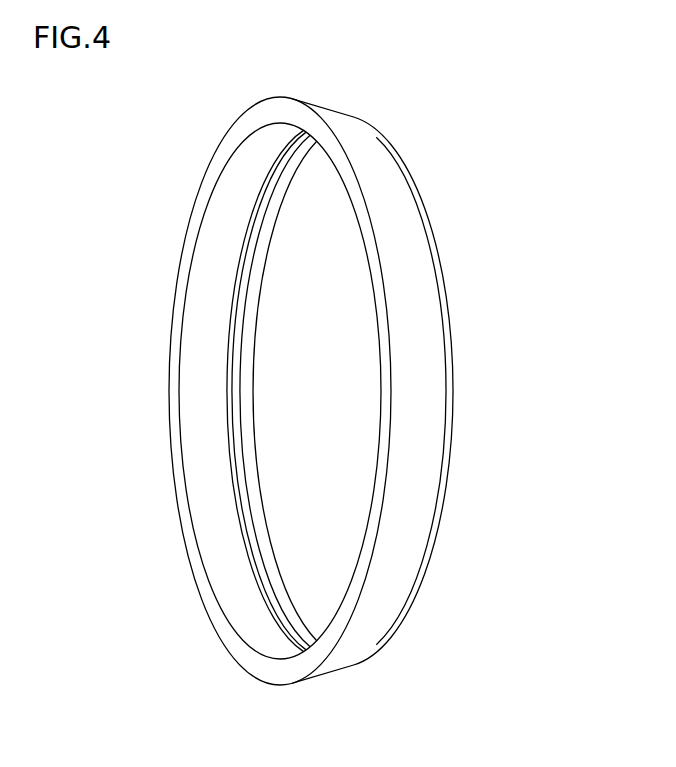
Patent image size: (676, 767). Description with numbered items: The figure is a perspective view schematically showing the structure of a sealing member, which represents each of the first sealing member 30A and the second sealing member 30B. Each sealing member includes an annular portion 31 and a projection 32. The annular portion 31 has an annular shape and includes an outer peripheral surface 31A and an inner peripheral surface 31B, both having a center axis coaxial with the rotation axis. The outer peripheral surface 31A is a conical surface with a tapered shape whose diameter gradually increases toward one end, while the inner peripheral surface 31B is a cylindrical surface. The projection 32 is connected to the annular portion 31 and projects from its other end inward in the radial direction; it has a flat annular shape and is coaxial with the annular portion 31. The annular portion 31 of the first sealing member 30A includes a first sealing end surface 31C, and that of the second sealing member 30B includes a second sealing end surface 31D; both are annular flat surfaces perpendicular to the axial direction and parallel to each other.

The first sealing member 30A is at (479, 160).
The second sealing member 30B is at (327, 374).
The annular portion 31 is at (384, 170).
The outer peripheral surface 31A is at (331, 109).
The inner peripheral surface 31B is at (207, 285).
The first sealing end surface 31C is at (212, 165).
The second sealing end surface 31D is at (282, 390).
The projection 32 is at (254, 240).